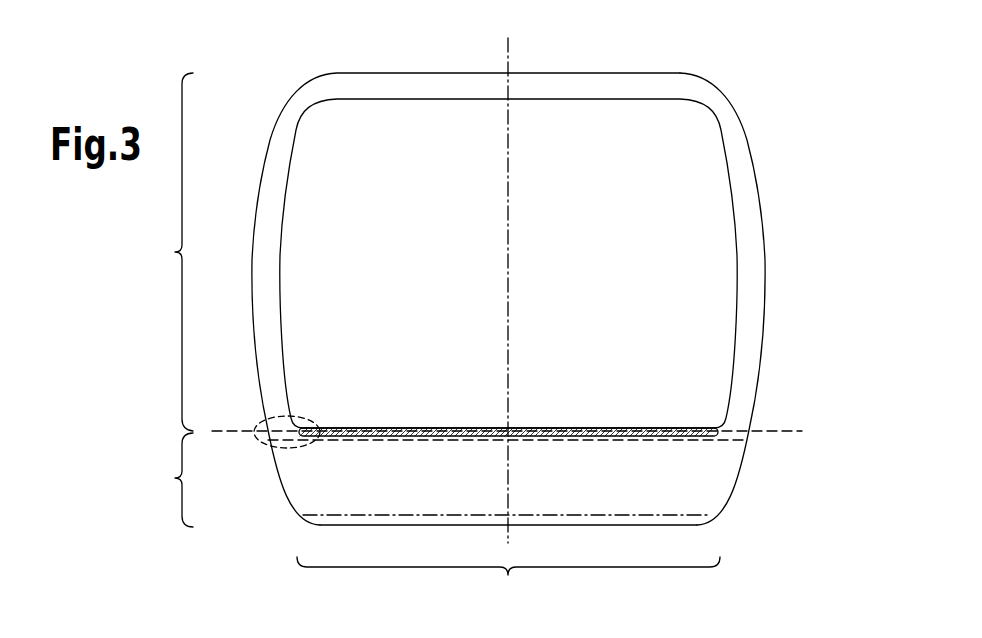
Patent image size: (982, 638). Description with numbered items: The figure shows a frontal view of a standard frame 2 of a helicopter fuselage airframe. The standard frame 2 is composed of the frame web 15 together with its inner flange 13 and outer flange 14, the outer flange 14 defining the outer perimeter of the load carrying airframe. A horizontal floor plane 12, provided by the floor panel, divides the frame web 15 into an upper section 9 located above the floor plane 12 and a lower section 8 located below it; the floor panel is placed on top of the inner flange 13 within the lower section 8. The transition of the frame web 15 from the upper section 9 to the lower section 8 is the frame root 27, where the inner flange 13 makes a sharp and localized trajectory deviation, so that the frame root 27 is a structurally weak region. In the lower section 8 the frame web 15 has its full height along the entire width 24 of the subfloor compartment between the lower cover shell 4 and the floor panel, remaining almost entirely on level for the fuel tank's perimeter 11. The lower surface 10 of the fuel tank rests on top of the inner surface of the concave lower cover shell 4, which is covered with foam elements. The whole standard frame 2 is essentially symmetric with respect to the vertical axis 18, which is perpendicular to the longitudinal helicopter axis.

The standard frame 2 is at (557, 340).
The lower cover shell 4 is at (673, 533).
The lower section 8 is at (172, 480).
The upper section 9 is at (172, 252).
The lower surface 10 is at (542, 521).
The fuel tank's perimeter 11 is at (723, 446).
The floor plane 12 is at (795, 446).
The inner flange 13 is at (742, 253).
The outer flange 14 is at (557, 340).
The frame web 15 is at (759, 363).
The vertical axis 18 is at (512, 56).
The width 24 is at (508, 582).
The frame root 27 is at (306, 414).